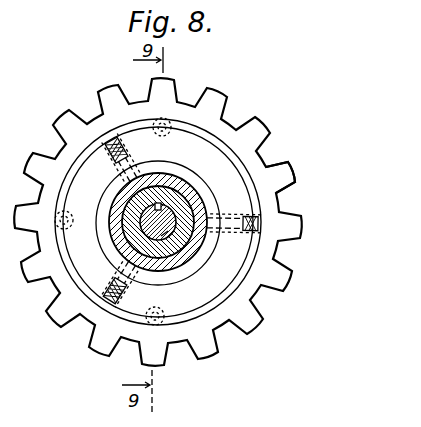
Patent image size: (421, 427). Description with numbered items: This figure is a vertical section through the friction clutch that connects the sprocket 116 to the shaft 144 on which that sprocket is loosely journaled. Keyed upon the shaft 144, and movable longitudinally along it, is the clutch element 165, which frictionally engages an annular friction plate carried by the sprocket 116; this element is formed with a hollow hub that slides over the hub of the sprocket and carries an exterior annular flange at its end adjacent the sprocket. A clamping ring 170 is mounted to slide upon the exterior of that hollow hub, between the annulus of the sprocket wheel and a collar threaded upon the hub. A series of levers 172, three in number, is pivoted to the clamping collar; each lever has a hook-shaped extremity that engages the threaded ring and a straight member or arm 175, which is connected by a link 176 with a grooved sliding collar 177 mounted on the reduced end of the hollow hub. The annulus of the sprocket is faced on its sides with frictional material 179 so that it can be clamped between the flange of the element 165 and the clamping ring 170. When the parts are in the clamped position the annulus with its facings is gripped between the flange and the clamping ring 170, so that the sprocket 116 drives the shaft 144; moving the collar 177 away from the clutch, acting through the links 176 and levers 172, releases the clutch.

The sprocket 116 is at (97, 348).
The shaft 144 is at (163, 238).
The element 165 is at (257, 293).
The clamping ring 170 is at (182, 300).
The levers 172 is at (112, 152).
The straight member or arm 175 is at (97, 140).
The link 176 is at (133, 155).
The grooved sliding collar 177 is at (190, 245).
The frictional material 179 is at (55, 212).